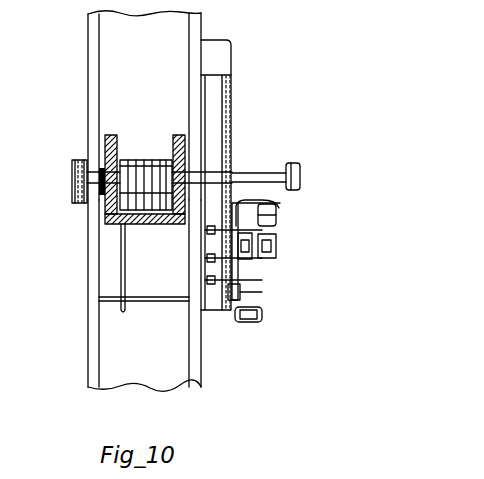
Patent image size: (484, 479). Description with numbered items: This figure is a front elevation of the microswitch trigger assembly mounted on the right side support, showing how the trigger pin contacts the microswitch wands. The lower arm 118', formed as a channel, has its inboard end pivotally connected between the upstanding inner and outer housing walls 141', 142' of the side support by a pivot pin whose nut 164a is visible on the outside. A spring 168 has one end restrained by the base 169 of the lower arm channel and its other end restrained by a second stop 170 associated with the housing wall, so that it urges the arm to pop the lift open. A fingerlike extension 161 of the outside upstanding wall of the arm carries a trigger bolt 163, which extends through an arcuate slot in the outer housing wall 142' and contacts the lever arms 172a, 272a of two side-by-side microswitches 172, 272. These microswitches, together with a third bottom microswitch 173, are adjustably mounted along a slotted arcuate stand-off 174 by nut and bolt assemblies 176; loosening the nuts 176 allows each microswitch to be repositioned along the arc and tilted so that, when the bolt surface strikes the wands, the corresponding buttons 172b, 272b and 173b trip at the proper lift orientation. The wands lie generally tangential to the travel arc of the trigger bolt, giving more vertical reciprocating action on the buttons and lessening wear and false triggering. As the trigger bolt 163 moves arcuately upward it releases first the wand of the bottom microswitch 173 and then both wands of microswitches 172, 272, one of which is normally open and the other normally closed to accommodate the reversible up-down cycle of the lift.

The lower arm 118' is at (63, 235).
The inner housing wall 141' is at (115, 295).
The outer housing wall 142' is at (144, 105).
The fingerlike extension 161 is at (173, 138).
The trigger bolt 163 is at (256, 170).
The nut 164a is at (74, 163).
The spring 168 is at (142, 160).
The base of the lower arm channel 169 is at (159, 225).
The second stop 170 is at (163, 302).
The microswitch 172 is at (263, 285).
The lever arm 172a is at (276, 238).
The microswitch button 172b is at (276, 250).
The third bottom microswitch 173 is at (258, 323).
The microswitch button 173b is at (264, 302).
The slotted arcuate stand-off 174 is at (232, 108).
The nut and bolt assemblies 176 is at (222, 298).
The microswitch 272 is at (257, 262).
The lever arm 272a is at (300, 178).
The microswitch button 272b is at (249, 240).